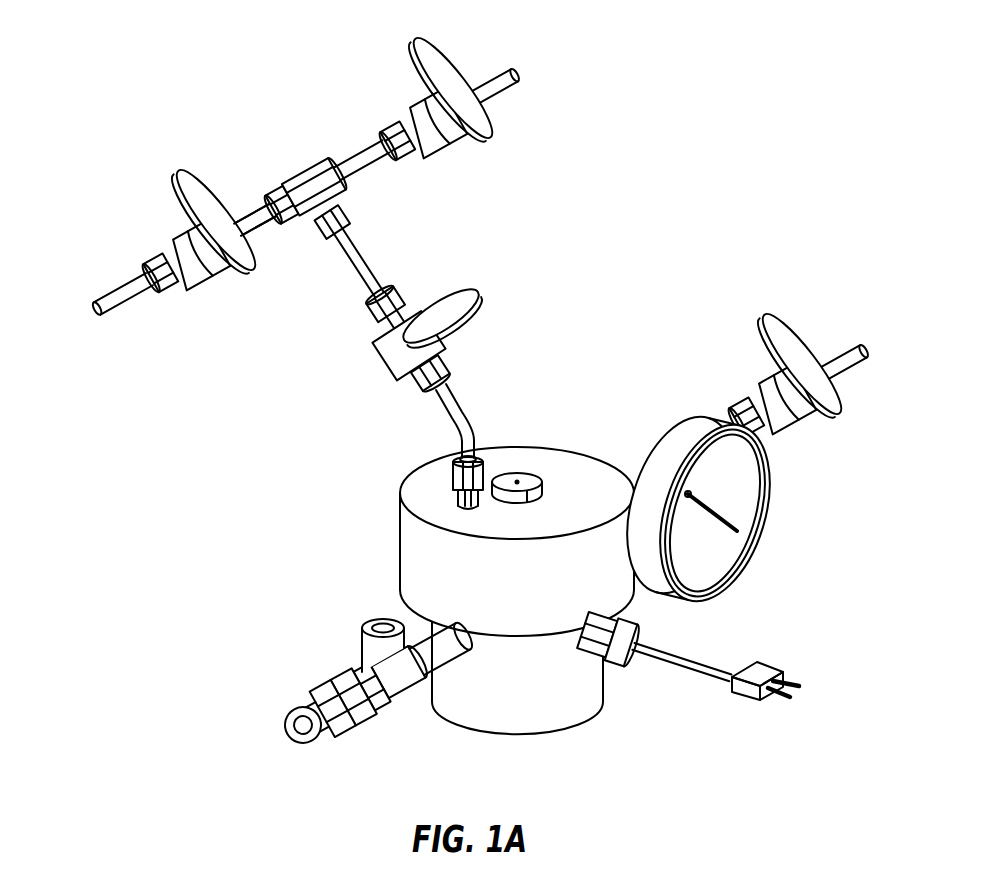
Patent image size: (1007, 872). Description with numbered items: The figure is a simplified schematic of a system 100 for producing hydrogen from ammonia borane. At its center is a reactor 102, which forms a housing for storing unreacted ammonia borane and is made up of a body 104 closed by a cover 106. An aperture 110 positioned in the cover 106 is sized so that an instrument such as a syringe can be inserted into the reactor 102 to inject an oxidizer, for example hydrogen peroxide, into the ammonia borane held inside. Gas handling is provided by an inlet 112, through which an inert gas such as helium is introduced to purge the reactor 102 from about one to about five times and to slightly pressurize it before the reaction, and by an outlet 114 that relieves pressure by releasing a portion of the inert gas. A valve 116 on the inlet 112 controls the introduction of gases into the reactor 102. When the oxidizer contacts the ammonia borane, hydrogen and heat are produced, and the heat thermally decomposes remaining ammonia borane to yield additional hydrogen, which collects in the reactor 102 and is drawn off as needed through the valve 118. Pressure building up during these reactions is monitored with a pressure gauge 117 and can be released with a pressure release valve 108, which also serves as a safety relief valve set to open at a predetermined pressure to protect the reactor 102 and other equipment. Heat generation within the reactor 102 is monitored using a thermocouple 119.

The system 100 is at (176, 74).
The reactor 102 is at (394, 444).
The body 104 is at (552, 732).
The cover 106 is at (398, 502).
The pressure release valve 108 is at (362, 657).
The aperture 110 is at (522, 479).
The inlet 112 is at (433, 142).
The outlet 114 is at (168, 247).
The valve 116 is at (483, 307).
The pressure gauge 117 is at (767, 503).
The valve 118 is at (797, 349).
The thermocouple 119 is at (763, 667).